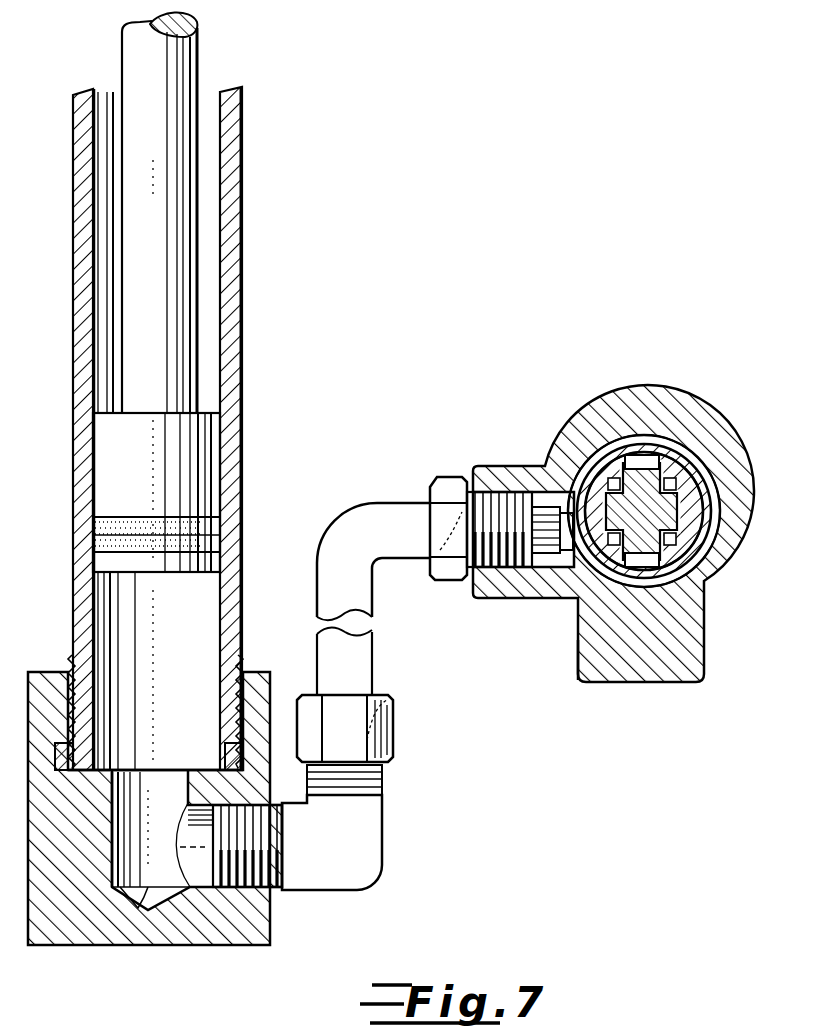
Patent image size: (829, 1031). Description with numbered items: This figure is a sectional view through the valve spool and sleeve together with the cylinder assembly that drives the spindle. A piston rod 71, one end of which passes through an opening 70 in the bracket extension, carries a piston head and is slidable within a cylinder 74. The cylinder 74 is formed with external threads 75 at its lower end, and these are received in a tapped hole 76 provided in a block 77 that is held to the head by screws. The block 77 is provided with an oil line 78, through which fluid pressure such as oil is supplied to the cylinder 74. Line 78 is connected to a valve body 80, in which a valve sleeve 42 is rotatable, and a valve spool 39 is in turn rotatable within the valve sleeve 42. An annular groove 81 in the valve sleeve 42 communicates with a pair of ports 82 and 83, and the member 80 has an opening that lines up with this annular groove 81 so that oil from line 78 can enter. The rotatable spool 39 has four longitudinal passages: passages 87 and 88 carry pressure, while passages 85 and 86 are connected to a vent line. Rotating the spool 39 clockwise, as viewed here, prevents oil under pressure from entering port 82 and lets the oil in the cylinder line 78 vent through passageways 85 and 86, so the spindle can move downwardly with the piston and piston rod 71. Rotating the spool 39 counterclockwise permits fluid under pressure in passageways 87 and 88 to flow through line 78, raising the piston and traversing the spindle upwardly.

The valve spool 39 is at (647, 487).
The valve sleeve 42 is at (575, 480).
The opening 70 is at (190, 473).
The piston rod 71 is at (180, 78).
The cylinder 74 is at (232, 340).
The external threads 75 is at (234, 668).
The tapped hole 76 is at (75, 700).
The block 77 is at (245, 930).
The oil line 78 is at (355, 657).
The valve body 80 is at (595, 655).
The annular groove 81 is at (705, 503).
The port 82 is at (640, 455).
The port 83 is at (700, 600).
The longitudinal passage 85 is at (597, 495).
The longitudinal passage 86 is at (687, 550).
The longitudinal passage 87 is at (673, 497).
The longitudinal passage 88 is at (590, 557).